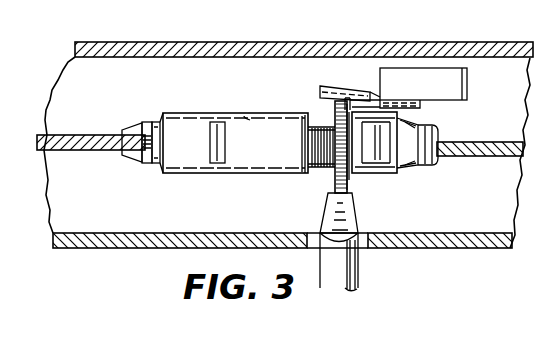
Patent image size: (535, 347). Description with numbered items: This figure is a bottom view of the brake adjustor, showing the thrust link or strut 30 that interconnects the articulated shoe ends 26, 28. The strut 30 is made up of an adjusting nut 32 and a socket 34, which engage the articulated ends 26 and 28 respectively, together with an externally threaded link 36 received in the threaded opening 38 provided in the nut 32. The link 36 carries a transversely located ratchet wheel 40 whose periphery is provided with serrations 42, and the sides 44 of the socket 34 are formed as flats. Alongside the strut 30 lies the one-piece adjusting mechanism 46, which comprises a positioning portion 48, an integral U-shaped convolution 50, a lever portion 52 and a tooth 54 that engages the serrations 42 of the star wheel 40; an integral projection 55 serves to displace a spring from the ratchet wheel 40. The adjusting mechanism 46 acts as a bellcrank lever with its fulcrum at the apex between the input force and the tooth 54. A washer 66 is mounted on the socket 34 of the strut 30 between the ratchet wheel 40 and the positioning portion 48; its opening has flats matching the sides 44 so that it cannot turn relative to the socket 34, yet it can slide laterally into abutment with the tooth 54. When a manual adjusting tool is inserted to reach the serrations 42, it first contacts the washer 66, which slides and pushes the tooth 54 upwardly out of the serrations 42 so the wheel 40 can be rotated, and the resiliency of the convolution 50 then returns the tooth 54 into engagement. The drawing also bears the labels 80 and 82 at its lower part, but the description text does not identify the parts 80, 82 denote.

The articulated shoe end 26 is at (82, 135).
The articulated shoe end 28 is at (485, 143).
The thrust link or strut 30 is at (197, 104).
The adjusting nut 32 is at (182, 160).
The socket 34 is at (397, 175).
The externally threaded link 36 is at (317, 125).
The threaded opening 38 is at (246, 120).
The ratchet wheel 40 is at (332, 183).
The serrations 42 is at (338, 200).
The sides of the socket 44 is at (373, 174).
The one-piece adjusting mechanism 46 is at (407, 59).
The positioning portion 48 is at (353, 182).
The U-shaped convolution 50 is at (468, 83).
The lever portion 52 is at (367, 97).
The tooth 54 is at (333, 93).
The integral projection 55 is at (412, 125).
The washer 66 is at (347, 100).
The inner tube 80 is at (356, 268).
The outer sleeve 82 is at (359, 247).